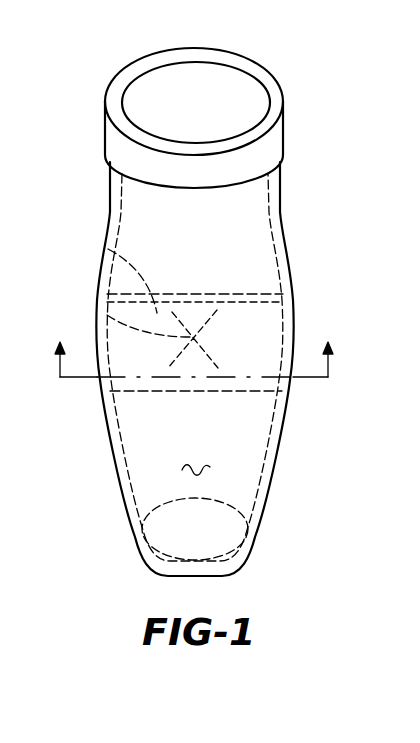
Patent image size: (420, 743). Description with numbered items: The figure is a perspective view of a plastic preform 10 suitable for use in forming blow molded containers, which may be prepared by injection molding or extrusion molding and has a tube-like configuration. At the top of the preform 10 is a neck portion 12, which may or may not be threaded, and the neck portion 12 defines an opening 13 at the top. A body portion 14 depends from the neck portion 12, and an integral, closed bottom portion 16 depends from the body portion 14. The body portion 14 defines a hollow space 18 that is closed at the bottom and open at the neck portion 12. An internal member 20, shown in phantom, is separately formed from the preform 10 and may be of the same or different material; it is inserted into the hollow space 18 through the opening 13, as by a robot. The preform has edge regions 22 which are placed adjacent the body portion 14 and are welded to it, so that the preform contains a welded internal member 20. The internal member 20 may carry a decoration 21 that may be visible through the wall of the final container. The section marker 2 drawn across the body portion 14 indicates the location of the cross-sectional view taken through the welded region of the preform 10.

The plastic preform 10 is at (286, 455).
The neck portion 12 is at (112, 139).
The opening 13 is at (218, 72).
The body portion 14 is at (284, 252).
The closed bottom portion 16 is at (234, 527).
The hollow space 18 is at (196, 457).
The internal member 20 is at (108, 249).
The decoration 21 is at (107, 315).
The edge regions 22 is at (286, 299).
The section line 2- 2 is at (194, 346).